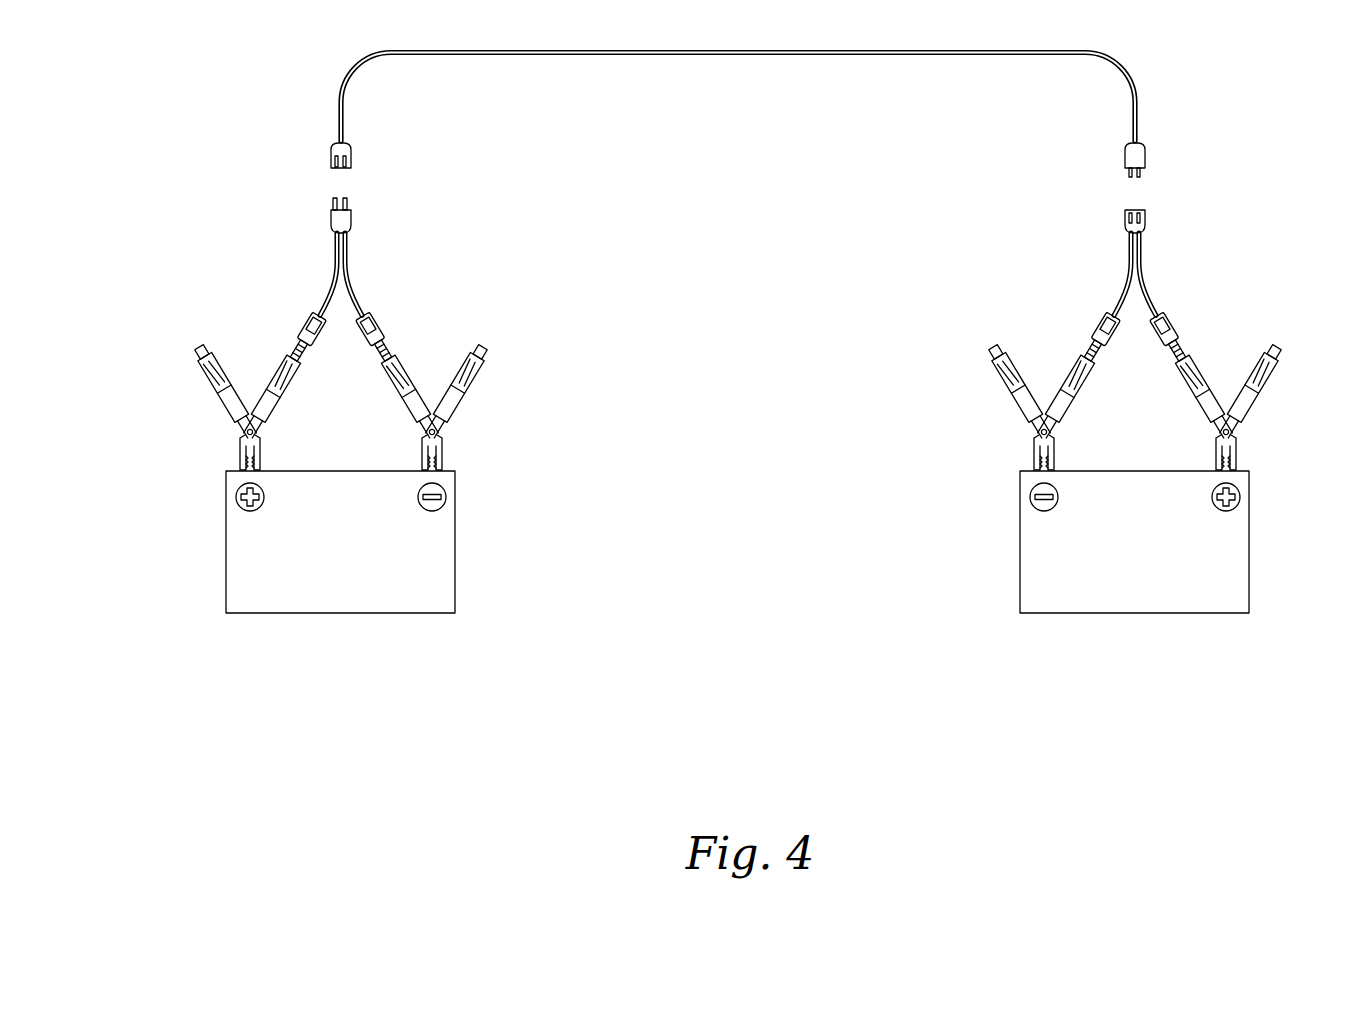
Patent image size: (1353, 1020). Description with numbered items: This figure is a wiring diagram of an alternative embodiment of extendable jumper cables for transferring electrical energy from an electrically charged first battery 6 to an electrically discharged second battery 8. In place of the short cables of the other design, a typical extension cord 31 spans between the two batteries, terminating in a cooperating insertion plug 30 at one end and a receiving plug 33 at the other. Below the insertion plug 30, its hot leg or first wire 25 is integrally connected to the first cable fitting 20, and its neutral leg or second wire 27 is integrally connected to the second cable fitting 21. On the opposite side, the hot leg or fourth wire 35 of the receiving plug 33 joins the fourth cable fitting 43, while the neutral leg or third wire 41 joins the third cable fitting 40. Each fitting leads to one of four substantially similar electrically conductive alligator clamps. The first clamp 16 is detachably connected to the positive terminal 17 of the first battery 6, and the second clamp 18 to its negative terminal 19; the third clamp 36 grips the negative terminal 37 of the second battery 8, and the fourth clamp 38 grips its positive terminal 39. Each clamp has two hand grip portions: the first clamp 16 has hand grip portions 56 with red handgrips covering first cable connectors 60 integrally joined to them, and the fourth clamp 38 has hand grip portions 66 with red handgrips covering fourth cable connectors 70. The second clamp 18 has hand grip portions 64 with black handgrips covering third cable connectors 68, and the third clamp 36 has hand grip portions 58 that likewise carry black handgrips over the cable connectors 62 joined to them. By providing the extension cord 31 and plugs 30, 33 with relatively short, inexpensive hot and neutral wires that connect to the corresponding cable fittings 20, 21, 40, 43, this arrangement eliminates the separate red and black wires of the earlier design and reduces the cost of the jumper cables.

The extension cord 31 is at (660, 55).
The insertion plug 30 is at (352, 220).
The receiving plug 33 is at (1146, 214).
The first wire 25 is at (330, 281).
The second wire 27 is at (350, 282).
The third wire 41 is at (1130, 262).
The fourth wire 35 is at (1148, 280).
The first cable fitting 20 is at (305, 320).
The second cable fitting 21 is at (380, 322).
The third cable fitting 40 is at (1103, 320).
The fourth cable fitting 43 is at (1172, 320).
The hand grip portions 56 is at (232, 395).
The first cable connectors 60 is at (278, 366).
The hand grip portions 64 is at (452, 397).
The third cable connectors 68 is at (457, 368).
The hand grip portions 58 is at (1068, 404).
The connector sleeves 62 is at (1074, 367).
The hand grip portions 66 is at (1250, 400).
The fourth cable connectors 70 is at (1260, 367).
The first clamp 16 is at (243, 434).
The second clamp 18 is at (440, 438).
The third clamp 36 is at (1033, 446).
The fourth clamp 38 is at (1240, 443).
The positive terminal 17 is at (247, 465).
The negative terminal 19 is at (440, 506).
The negative terminal 37 is at (1041, 466).
The positive terminal 39 is at (1265, 493).
The first battery 6 is at (340, 614).
The second battery 8 is at (1135, 614).